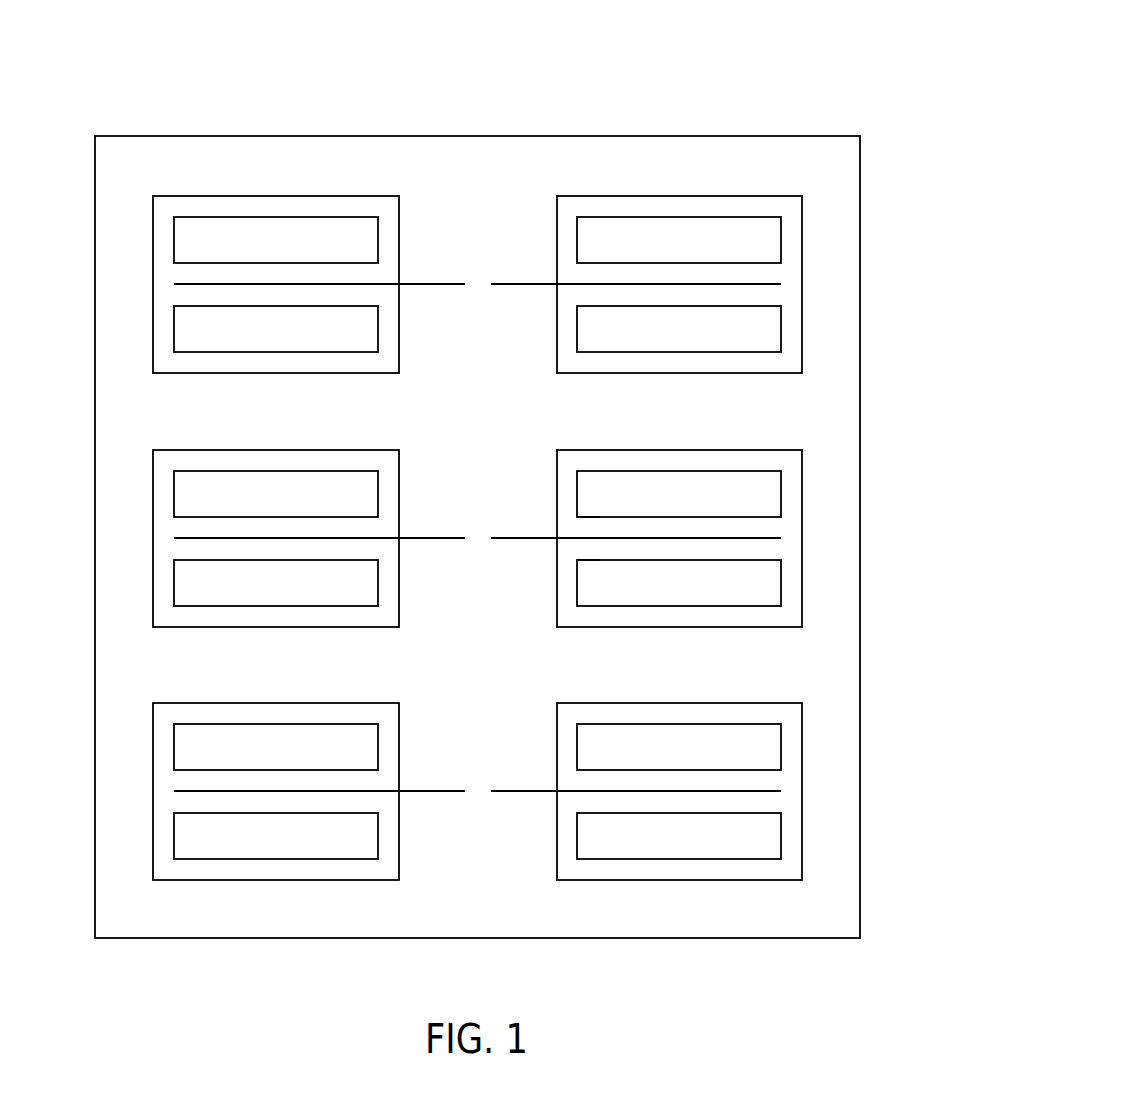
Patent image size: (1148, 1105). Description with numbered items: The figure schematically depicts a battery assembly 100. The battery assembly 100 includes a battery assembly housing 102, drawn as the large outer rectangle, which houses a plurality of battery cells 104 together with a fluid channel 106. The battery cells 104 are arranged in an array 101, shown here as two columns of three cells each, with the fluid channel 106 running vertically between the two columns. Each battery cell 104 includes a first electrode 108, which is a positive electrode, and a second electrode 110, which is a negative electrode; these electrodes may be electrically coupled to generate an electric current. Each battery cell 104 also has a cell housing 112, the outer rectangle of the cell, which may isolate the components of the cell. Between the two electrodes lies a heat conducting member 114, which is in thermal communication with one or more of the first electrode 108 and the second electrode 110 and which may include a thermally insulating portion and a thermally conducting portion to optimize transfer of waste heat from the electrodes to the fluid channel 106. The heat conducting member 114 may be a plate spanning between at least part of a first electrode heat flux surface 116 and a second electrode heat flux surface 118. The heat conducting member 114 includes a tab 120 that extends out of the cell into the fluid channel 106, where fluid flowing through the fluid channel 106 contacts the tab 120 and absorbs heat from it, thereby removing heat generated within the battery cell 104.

The battery assembly 100 is at (500, 474).
The array 101 is at (499, 477).
The battery assembly housing 102 is at (662, 136).
The battery cell 104 is at (668, 533).
The fluid channel 106 is at (499, 443).
The first electrode 108 is at (717, 470).
The second electrode 110 is at (712, 605).
The cell housing 112 is at (803, 475).
The heat conducting member 114 is at (773, 539).
The first electrode heat flux surface 116 is at (593, 517).
The second electrode heat flux surface 118 is at (593, 559).
The tab 120 is at (433, 283).